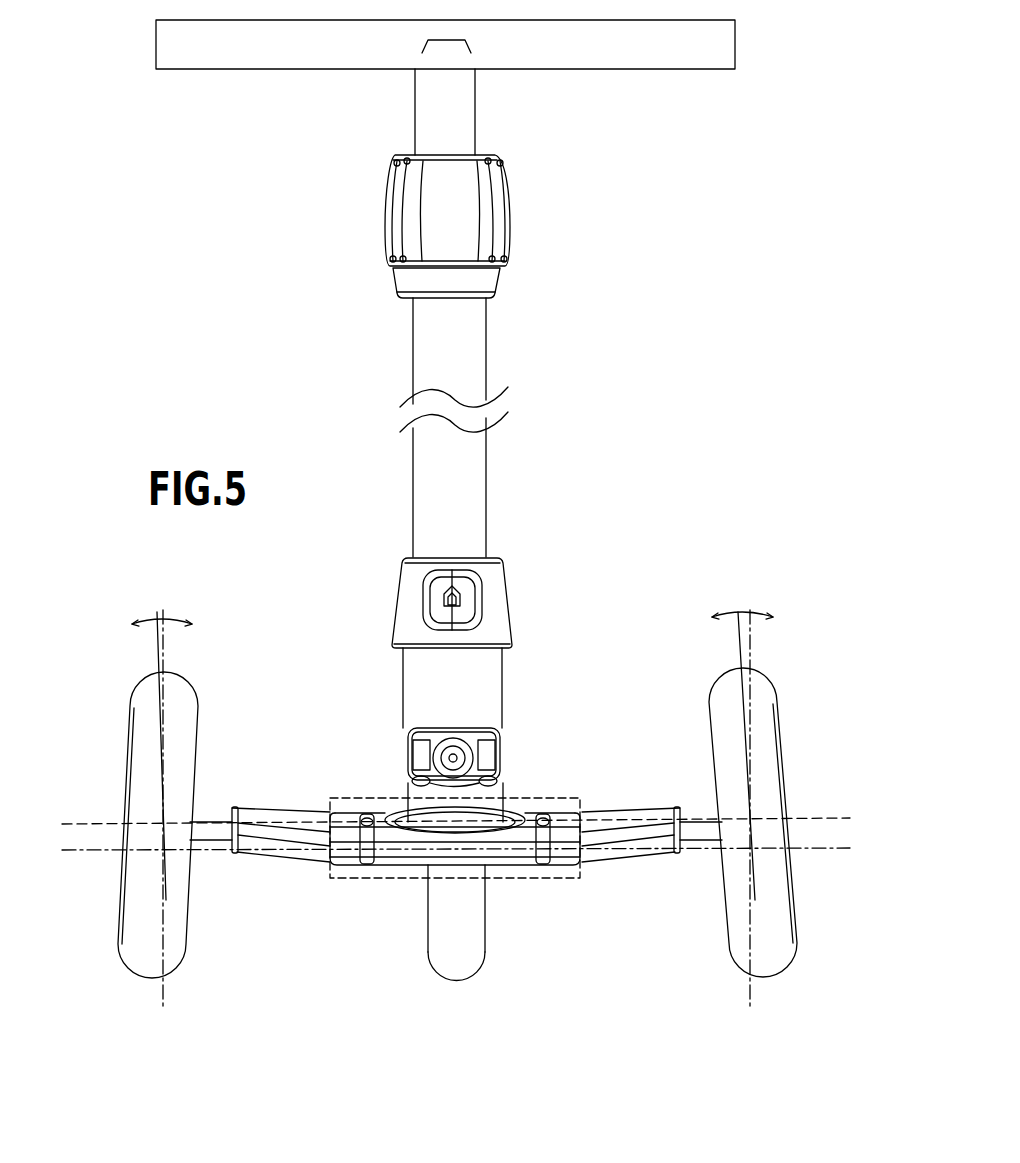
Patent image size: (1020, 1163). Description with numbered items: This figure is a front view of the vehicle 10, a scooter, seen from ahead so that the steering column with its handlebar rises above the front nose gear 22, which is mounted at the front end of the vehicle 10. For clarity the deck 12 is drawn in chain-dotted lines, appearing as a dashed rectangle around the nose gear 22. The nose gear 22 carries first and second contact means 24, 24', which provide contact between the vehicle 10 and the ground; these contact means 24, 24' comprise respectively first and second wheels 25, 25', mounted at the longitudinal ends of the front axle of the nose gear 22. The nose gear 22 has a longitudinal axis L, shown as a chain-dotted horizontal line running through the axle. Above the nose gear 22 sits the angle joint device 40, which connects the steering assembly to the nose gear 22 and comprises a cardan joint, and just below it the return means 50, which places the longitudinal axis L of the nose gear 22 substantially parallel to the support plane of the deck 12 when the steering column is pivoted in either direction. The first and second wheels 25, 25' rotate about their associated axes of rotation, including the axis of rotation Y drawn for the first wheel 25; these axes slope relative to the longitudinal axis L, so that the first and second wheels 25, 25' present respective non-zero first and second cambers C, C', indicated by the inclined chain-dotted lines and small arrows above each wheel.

The vehicle 10 is at (557, 350).
The deck 12 is at (535, 800).
The front nose gear 22 is at (553, 877).
The first contact means 24 is at (145, 812).
The second contact means 24' is at (764, 810).
The first wheel 25 is at (204, 756).
The second wheel 25' is at (705, 756).
The angle joint device 40 is at (517, 717).
The return means 50 is at (392, 772).
The first camber C is at (162, 796).
The second camber C' is at (742, 796).
The axis of rotation Y is at (96, 822).
The longitudinal axis L is at (92, 850).